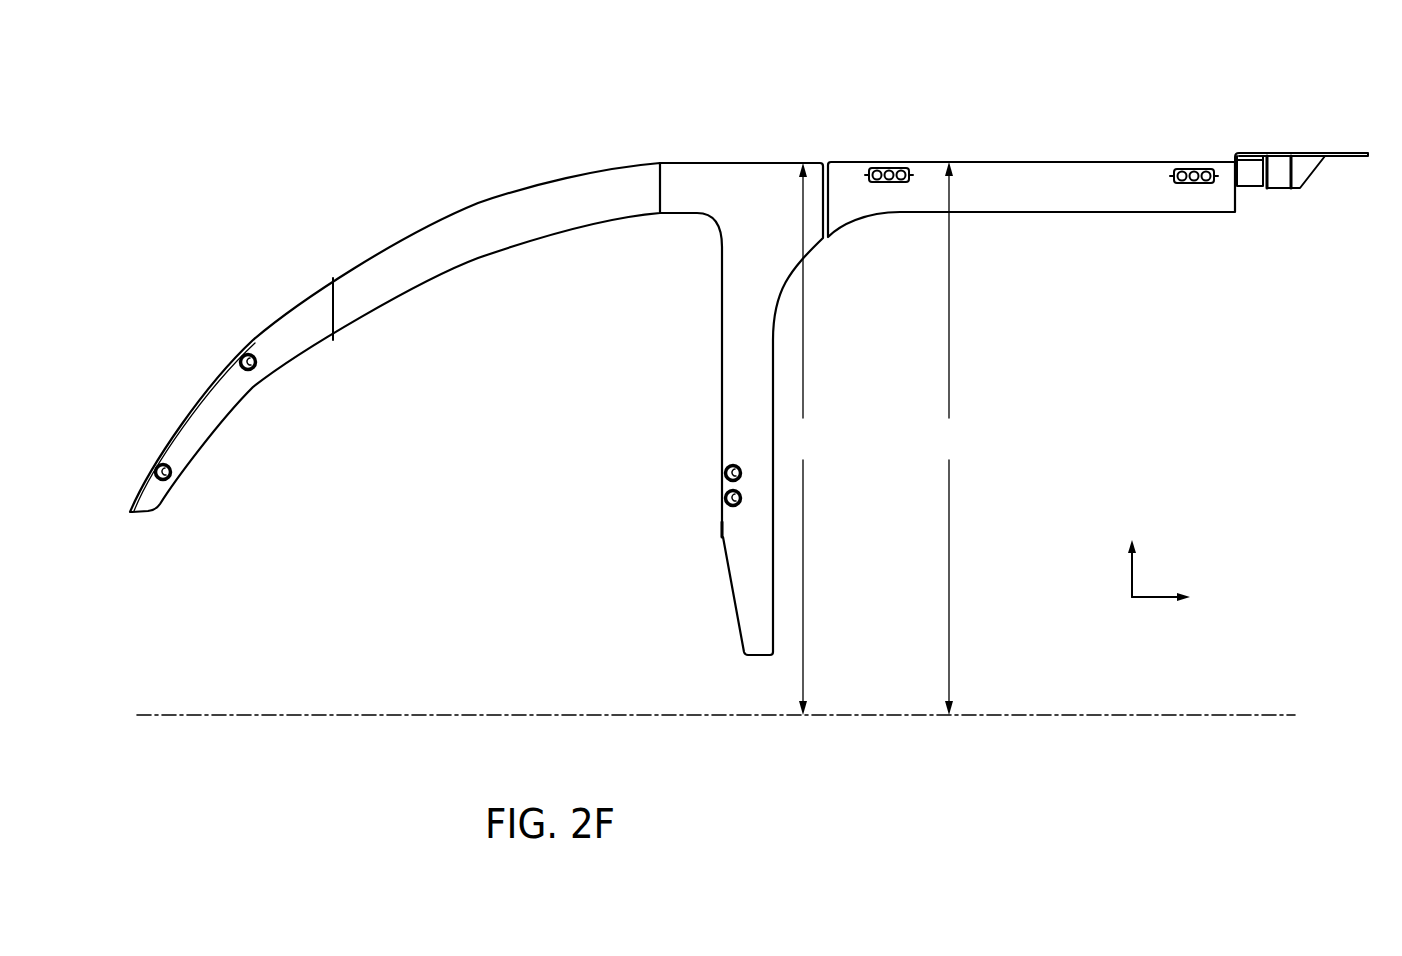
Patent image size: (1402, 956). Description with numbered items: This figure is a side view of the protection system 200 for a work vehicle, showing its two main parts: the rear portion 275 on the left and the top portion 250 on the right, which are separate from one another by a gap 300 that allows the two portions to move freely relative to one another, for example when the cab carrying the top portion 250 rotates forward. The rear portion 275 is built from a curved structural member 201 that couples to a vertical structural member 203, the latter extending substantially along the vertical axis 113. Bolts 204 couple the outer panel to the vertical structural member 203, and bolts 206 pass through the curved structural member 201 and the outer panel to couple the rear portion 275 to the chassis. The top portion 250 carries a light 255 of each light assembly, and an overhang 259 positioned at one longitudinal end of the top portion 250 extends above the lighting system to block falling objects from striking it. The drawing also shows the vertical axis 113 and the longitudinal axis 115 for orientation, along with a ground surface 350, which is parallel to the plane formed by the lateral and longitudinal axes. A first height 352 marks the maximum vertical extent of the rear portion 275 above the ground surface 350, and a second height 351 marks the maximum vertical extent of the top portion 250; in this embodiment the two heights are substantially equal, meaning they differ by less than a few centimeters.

The protection system 200 is at (515, 85).
The rear portion 275 is at (452, 146).
The curved structural member 201 is at (405, 296).
The vertical structural member 203 is at (720, 380).
The bolts 204 is at (724, 474).
The bolts 206 is at (240, 359).
The gap 300 is at (833, 150).
The top portion 250 is at (1037, 146).
The light 255 is at (1191, 168).
The overhang 259 is at (1319, 137).
The ground surface 350 is at (1062, 714).
The second height 351 is at (950, 438).
The first height 352 is at (805, 439).
The vertical axis 113 is at (1130, 572).
The longitudinal axis 115 is at (1155, 597).